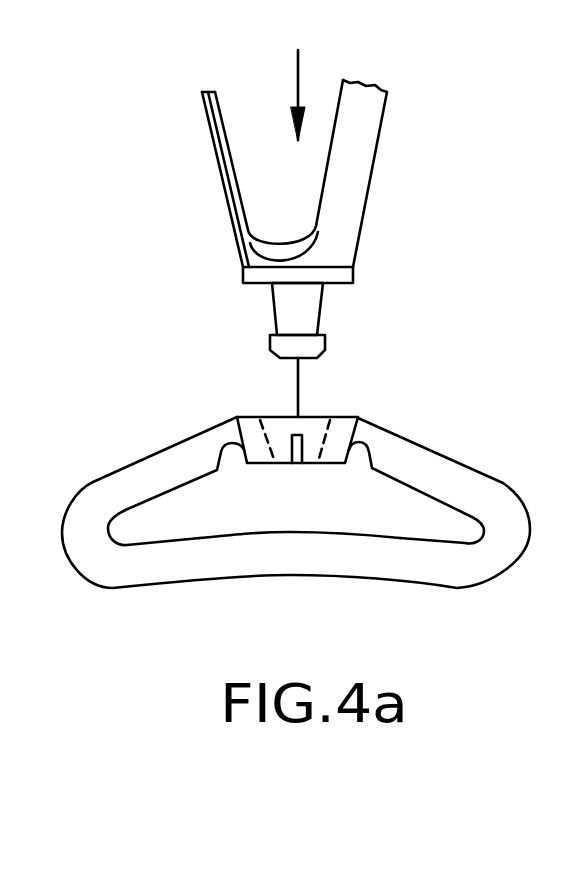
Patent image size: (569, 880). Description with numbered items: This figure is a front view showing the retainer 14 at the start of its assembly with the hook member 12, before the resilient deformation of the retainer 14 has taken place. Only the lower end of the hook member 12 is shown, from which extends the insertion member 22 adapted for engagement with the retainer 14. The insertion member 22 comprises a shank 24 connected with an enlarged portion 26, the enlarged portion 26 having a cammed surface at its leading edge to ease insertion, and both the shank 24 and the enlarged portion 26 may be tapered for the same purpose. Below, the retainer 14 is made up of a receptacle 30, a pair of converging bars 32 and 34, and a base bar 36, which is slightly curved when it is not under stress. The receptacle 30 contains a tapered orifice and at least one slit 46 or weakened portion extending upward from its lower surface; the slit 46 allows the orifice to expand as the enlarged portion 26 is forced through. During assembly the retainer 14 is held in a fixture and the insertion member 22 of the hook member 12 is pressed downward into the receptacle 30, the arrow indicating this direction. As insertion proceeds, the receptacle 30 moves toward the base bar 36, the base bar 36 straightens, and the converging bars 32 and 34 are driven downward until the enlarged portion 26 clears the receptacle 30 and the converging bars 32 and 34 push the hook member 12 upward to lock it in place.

The hook member 12 is at (365, 188).
The insertion member 22 is at (282, 339).
The shank 24 is at (308, 315).
The enlarged portion 26 is at (293, 345).
The receptacle 30 is at (350, 433).
The slit 46 is at (303, 452).
The converging bar 32 is at (153, 468).
The converging bar 34 is at (418, 468).
The retainer 14 is at (510, 490).
The base bar 36 is at (272, 560).